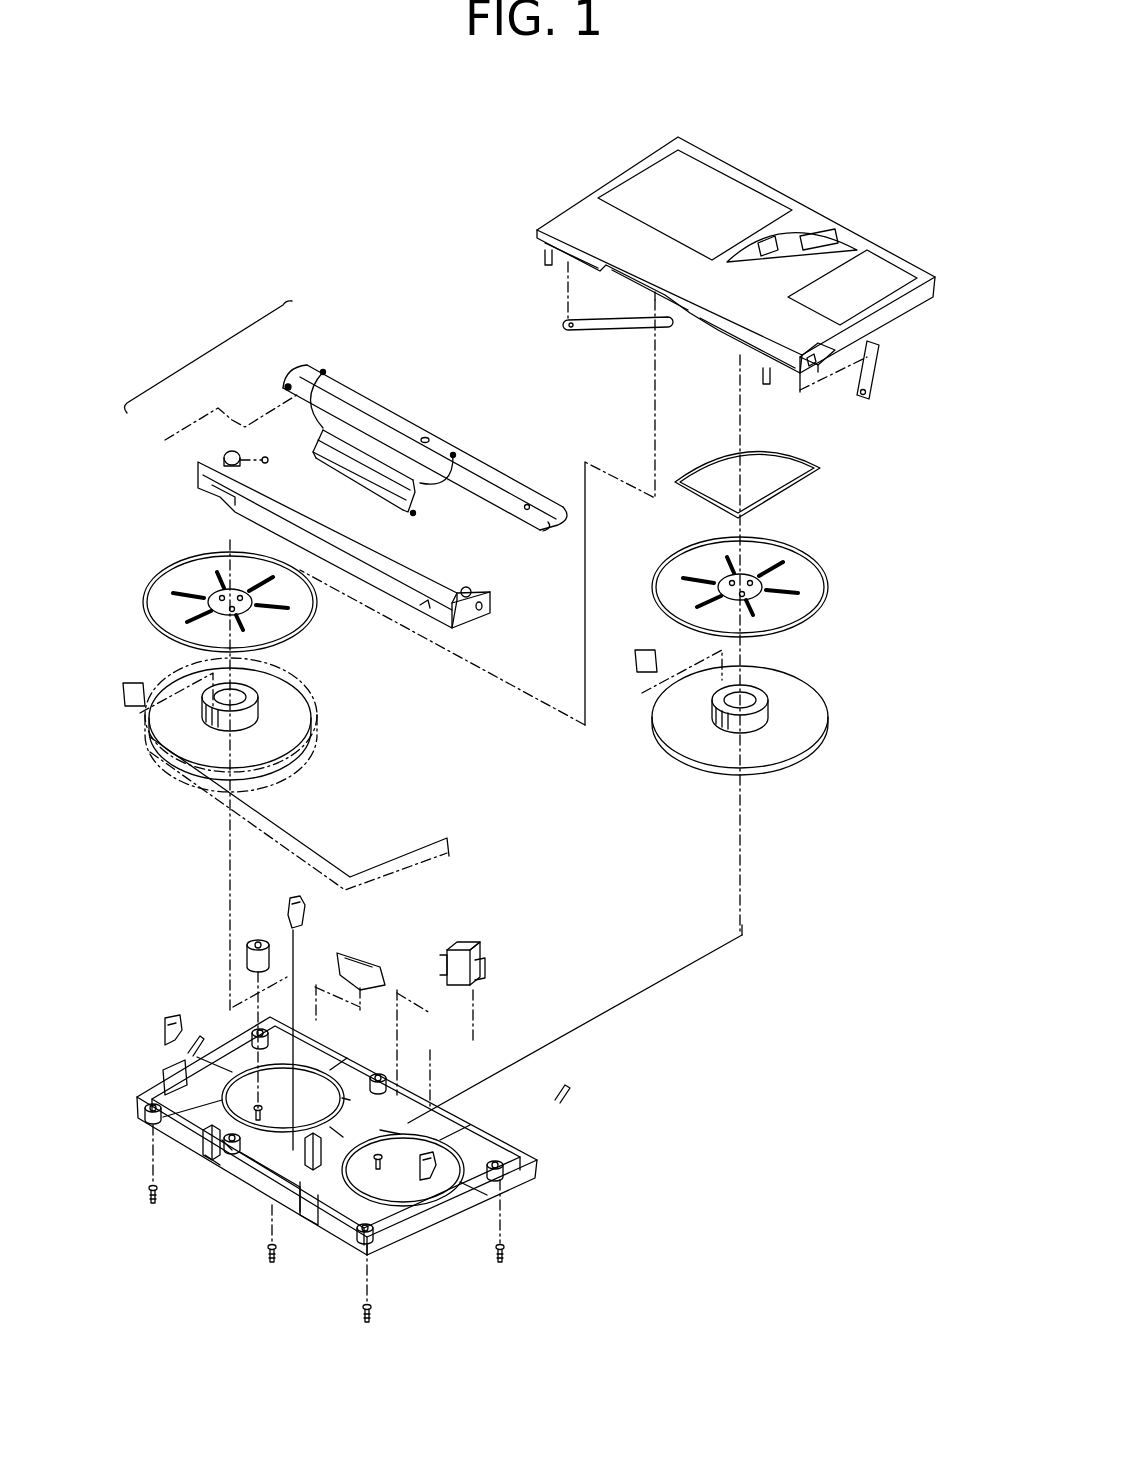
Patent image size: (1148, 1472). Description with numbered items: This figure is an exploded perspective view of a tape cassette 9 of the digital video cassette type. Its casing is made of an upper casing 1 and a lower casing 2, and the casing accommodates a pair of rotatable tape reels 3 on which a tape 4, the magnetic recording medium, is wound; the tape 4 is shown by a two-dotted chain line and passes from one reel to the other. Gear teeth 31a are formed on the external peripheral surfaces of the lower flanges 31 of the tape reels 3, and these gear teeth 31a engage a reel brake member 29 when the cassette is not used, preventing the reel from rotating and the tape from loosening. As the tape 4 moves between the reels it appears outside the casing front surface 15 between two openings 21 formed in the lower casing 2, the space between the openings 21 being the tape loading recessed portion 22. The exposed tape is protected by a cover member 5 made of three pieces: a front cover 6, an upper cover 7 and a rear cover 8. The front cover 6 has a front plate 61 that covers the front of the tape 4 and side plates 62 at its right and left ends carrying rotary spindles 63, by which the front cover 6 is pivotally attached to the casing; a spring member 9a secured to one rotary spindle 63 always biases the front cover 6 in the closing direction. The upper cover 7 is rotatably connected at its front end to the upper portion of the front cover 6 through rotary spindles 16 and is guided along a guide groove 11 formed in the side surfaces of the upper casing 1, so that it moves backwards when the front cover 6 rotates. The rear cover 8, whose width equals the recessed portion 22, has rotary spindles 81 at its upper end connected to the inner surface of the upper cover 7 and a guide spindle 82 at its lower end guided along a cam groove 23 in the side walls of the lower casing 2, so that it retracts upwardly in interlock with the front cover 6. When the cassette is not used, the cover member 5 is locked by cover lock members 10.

The upper casing 1 is at (598, 208).
The lower casing 2 is at (371, 1178).
The tape reel 3 is at (481, 639).
The tape 4 is at (207, 797).
The cover member 5 is at (213, 348).
The front cover 6 is at (346, 534).
The front plate 61 is at (253, 505).
The side plate 62 is at (466, 616).
The rotary spindle 63 is at (238, 452).
The upper cover 7 is at (368, 405).
The rear cover 8 is at (400, 488).
The rotary spindle 81 is at (323, 371).
The guide spindle 82 is at (414, 515).
The rotary spindle 16 is at (285, 387).
The tape cassette 9 is at (713, 971).
The spring member 9a is at (270, 461).
The cover lock member 10 is at (168, 1018).
The guide groove 11 is at (817, 363).
The casing front surface 15 is at (333, 1243).
The opening 21 is at (182, 1143).
The tape loading recessed portion 22 is at (257, 1180).
The cam groove 23 is at (222, 1150).
The reel brake member 29 is at (476, 943).
The lower flange 31 is at (280, 727).
The gear teeth 31a is at (255, 770).